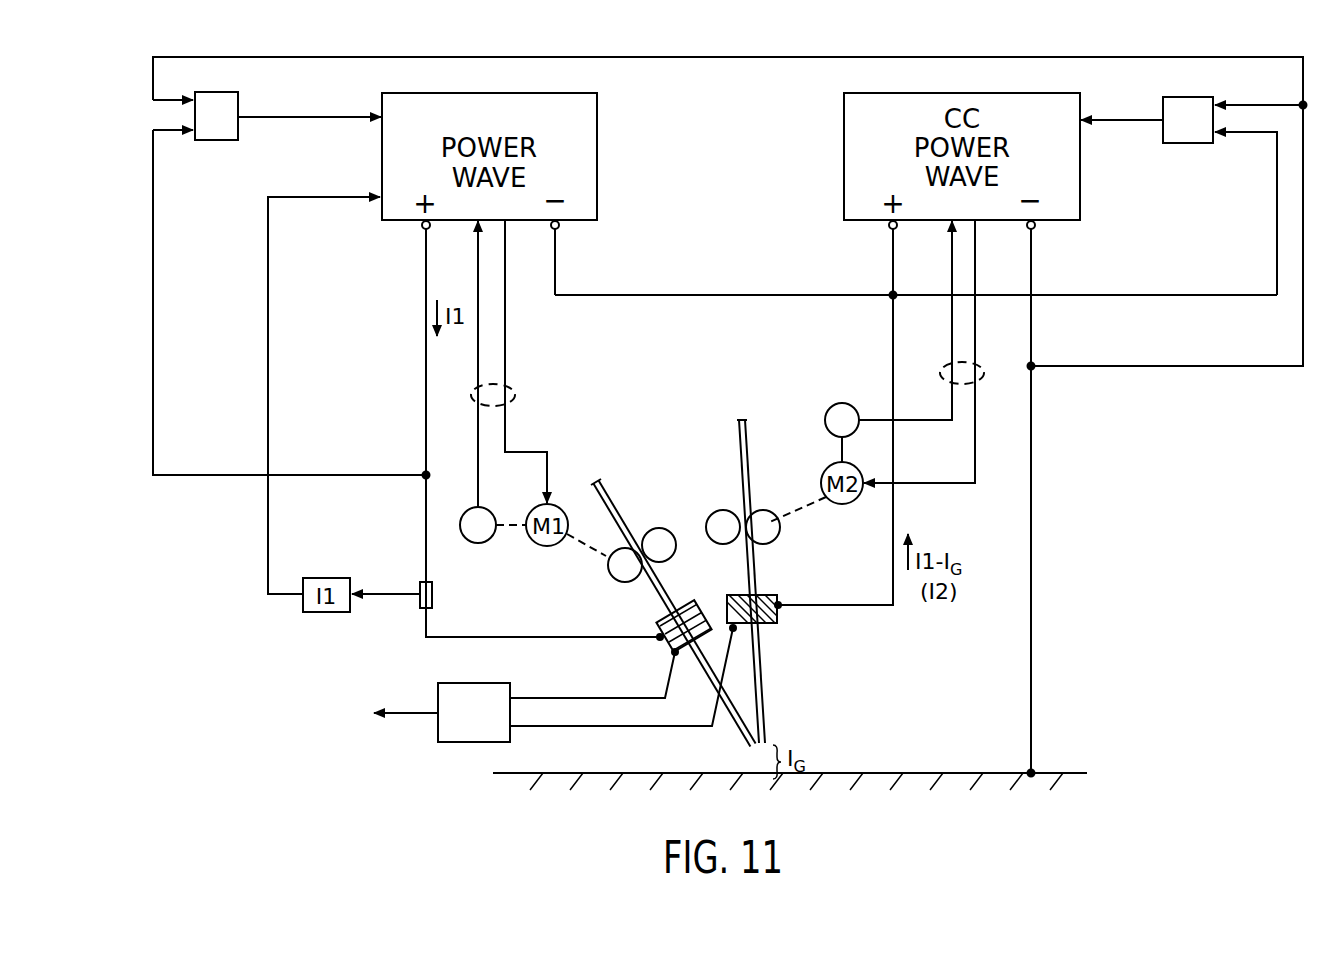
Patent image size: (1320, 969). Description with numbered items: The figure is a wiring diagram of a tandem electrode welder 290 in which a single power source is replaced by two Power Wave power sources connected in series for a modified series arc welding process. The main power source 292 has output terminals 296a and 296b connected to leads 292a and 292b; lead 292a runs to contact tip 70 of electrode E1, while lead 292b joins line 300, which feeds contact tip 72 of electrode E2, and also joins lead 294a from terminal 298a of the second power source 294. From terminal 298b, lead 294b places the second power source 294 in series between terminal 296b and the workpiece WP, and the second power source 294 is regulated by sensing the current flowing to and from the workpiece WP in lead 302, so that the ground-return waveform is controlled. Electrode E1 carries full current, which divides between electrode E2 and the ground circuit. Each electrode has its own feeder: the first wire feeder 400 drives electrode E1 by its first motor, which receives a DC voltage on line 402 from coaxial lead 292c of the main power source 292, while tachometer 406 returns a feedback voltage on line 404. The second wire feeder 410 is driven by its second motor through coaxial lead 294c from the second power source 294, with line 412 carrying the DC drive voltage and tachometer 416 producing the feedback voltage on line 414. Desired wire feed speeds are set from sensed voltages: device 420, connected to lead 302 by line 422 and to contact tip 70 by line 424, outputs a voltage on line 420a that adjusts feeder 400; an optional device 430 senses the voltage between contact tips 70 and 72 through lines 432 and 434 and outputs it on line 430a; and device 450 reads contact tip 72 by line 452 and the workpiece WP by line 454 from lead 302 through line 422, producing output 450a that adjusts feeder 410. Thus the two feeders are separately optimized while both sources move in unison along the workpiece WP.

The tandem electrode welder 290 is at (1187, 521).
The main power source 292 is at (598, 136).
The second power source 294 is at (844, 152).
The lead 292a is at (495, 637).
The lead 292b is at (703, 294).
The lead 292c is at (514, 393).
The lead 294a is at (891, 262).
The lead 294b is at (1033, 343).
The lead 294c is at (985, 378).
The output terminal 296a is at (423, 229).
The output terminal 296b is at (558, 229).
The terminal 298a is at (890, 228).
The terminal 298b is at (1035, 228).
The line 300 is at (860, 607).
The lead 302 is at (1033, 655).
The first wire feeder 400 is at (579, 454).
The line 402 is at (508, 428).
The line 404 is at (478, 437).
The tachometer 406 is at (460, 525).
The second wire feeder 410 is at (786, 451).
The line 412 is at (943, 486).
The line 414 is at (918, 425).
The tachometer 416 is at (830, 405).
The voltage sensing circuit or device 420 is at (218, 141).
The line 420a is at (275, 119).
The line 422 is at (1117, 368).
The line 424 is at (158, 300).
The option circuit or device 430 is at (448, 742).
The line 430a is at (410, 711).
The line 432 is at (548, 697).
The line 434 is at (548, 726).
The voltage sensing circuit or device 450 is at (1183, 144).
The output 450a is at (1112, 122).
The line 452 is at (1168, 297).
The line 454 is at (1260, 107).
The contact tip 70 is at (663, 623).
The contact tip 72 is at (765, 595).
The electrode E1 is at (735, 728).
The electrode E2 is at (765, 682).
The workpiece WP is at (894, 771).